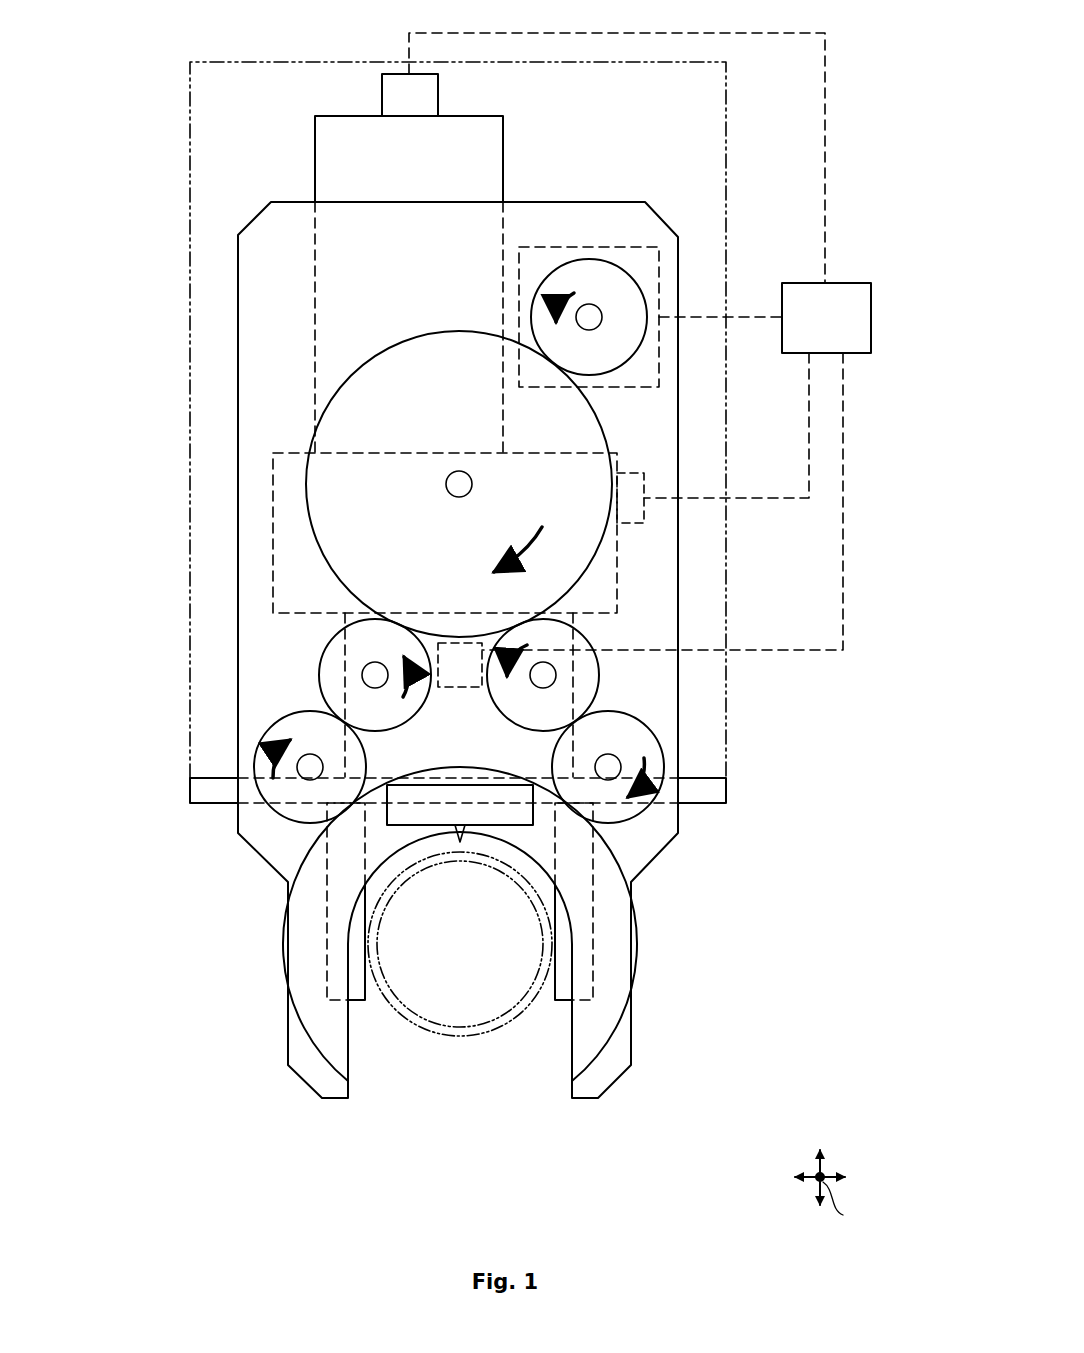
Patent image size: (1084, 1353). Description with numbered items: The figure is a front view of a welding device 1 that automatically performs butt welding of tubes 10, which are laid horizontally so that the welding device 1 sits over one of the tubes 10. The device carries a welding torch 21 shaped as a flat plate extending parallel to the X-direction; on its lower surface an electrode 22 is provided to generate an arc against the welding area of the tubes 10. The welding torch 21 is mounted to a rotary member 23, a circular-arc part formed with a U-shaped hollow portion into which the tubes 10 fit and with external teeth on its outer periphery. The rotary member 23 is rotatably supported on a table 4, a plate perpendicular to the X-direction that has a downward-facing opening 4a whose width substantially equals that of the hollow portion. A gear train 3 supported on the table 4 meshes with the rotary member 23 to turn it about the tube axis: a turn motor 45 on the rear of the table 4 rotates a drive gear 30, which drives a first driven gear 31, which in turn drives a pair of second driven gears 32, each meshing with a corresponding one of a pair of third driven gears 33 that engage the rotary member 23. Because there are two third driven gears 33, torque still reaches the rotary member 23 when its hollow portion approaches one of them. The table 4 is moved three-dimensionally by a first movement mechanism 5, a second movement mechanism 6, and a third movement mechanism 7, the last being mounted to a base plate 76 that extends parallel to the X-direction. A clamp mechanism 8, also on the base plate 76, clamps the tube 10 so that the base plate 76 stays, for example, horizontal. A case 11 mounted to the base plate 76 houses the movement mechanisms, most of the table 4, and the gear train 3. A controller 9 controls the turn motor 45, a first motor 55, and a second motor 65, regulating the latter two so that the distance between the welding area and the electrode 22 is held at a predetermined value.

The welding device 1 is at (150, 113).
The case 11 is at (190, 190).
The table 4 is at (272, 305).
The opening 4a is at (538, 1060).
The first movement mechanism 5 is at (315, 140).
The first motor 55 is at (388, 95).
The controller 9 is at (855, 300).
The turn motor 45 is at (560, 247).
The drive gear 30 is at (606, 278).
The gear train 3 is at (338, 388).
The first driven gear 31 is at (350, 543).
The second movement mechanism 6 is at (268, 505).
The second motor 65 is at (637, 523).
The third movement mechanism 7 is at (330, 690).
The second driven gears 32 is at (330, 657).
The third driven gears 33 is at (265, 752).
The base plate 76 is at (698, 788).
The clamp mechanism 8 is at (595, 911).
The welding torch 21 is at (418, 813).
The electrode 22 is at (467, 840).
The rotary member 23 is at (610, 953).
The tubes 10 is at (493, 1037).